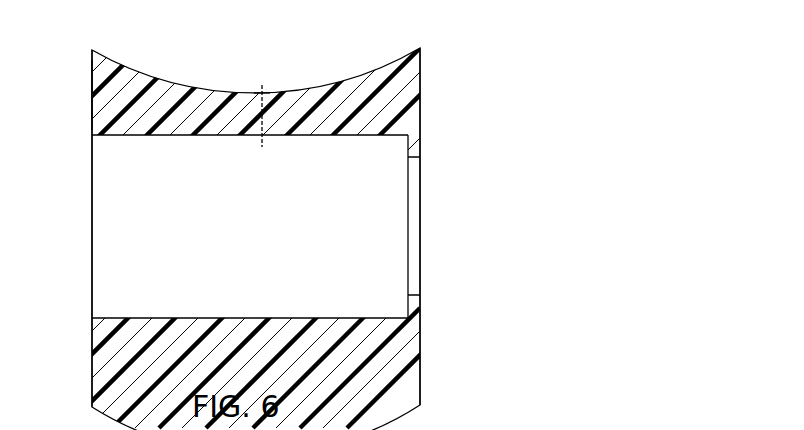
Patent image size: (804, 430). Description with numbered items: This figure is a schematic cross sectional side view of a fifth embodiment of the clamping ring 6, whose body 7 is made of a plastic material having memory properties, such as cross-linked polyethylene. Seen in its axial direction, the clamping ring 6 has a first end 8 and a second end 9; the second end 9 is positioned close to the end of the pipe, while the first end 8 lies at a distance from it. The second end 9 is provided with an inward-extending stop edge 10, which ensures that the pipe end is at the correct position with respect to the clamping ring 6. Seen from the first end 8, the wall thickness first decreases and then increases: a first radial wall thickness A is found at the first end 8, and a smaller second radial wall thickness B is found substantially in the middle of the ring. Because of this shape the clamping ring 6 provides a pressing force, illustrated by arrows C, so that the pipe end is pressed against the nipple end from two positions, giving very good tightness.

The clamping ring 6 is at (375, 49).
The body 7 is at (120, 80).
The first end 8 is at (92, 115).
The second end 9 is at (422, 91).
The stop edge 10 is at (421, 158).
The first radial wall thickness A is at (92, 97).
The second radial wall thickness B is at (273, 97).
The arrows illustrating pressing force C is at (143, 111).